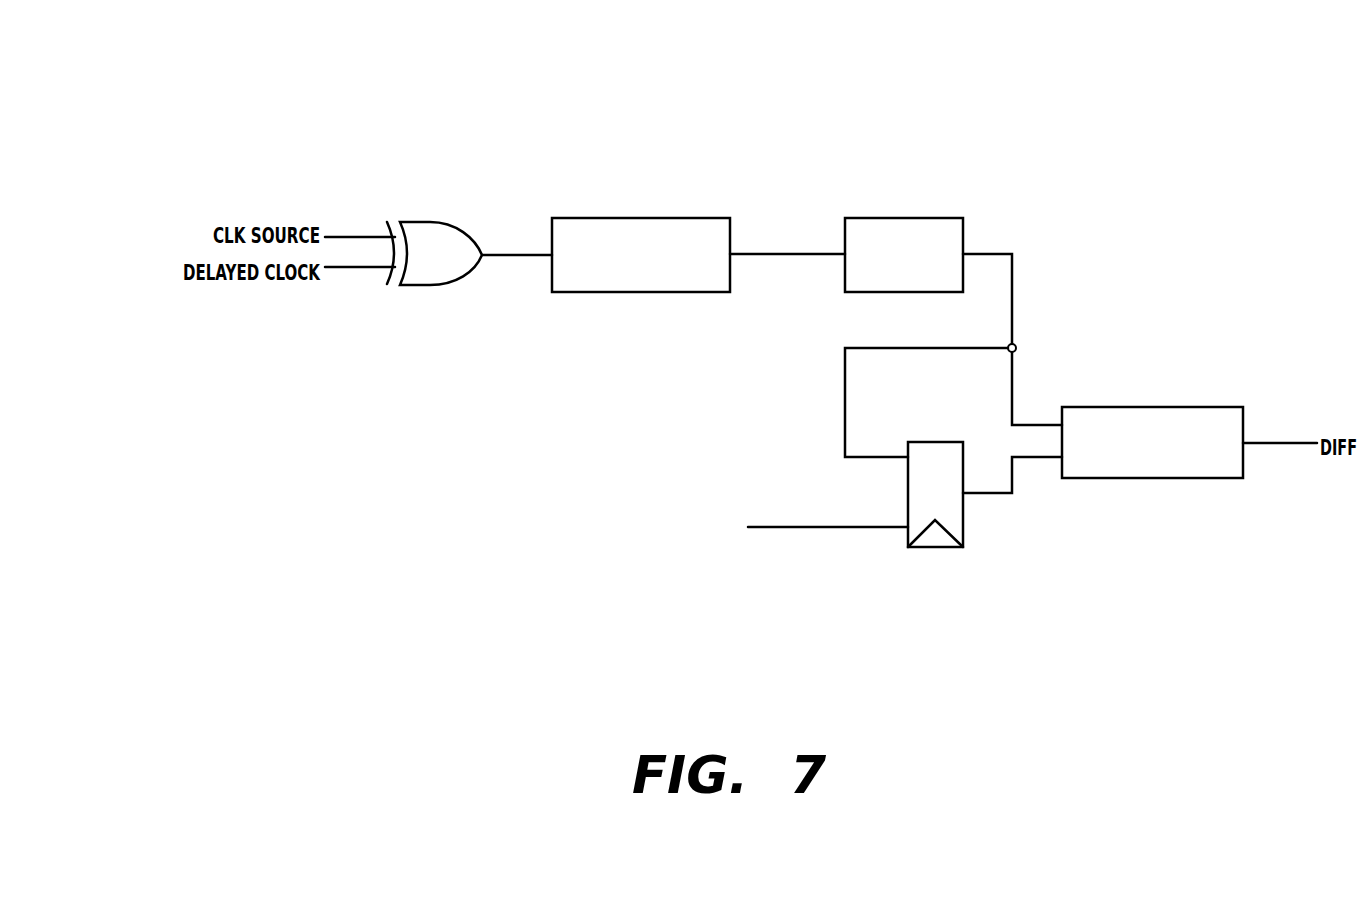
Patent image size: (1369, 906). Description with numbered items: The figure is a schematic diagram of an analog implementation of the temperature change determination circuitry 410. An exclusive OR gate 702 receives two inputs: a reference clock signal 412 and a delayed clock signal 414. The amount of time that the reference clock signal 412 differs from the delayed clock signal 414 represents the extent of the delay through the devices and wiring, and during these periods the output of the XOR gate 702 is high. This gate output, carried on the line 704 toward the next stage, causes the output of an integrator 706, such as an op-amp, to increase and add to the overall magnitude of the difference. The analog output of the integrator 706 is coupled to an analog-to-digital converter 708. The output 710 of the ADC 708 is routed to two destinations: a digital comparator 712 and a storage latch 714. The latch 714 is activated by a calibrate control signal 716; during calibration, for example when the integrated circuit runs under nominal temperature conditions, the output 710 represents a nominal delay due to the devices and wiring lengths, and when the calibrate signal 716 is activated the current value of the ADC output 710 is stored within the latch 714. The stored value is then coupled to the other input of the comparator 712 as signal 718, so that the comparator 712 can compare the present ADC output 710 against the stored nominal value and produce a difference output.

The temperature change determination circuitry 410 is at (163, 100).
The reference clock signal 412 is at (358, 237).
The delayed clock signal 414 is at (362, 270).
The exclusive OR gate 702 is at (440, 232).
The XOR output signal 704 is at (520, 255).
The integrator 706 is at (718, 227).
The analog-to-digital converter 708 is at (950, 227).
The output of ADC 710 is at (1012, 307).
The digital comparator 712 is at (1230, 420).
The storage latch 714 is at (928, 540).
The calibrate control signal 716 is at (830, 528).
The signal 718 is at (1013, 478).